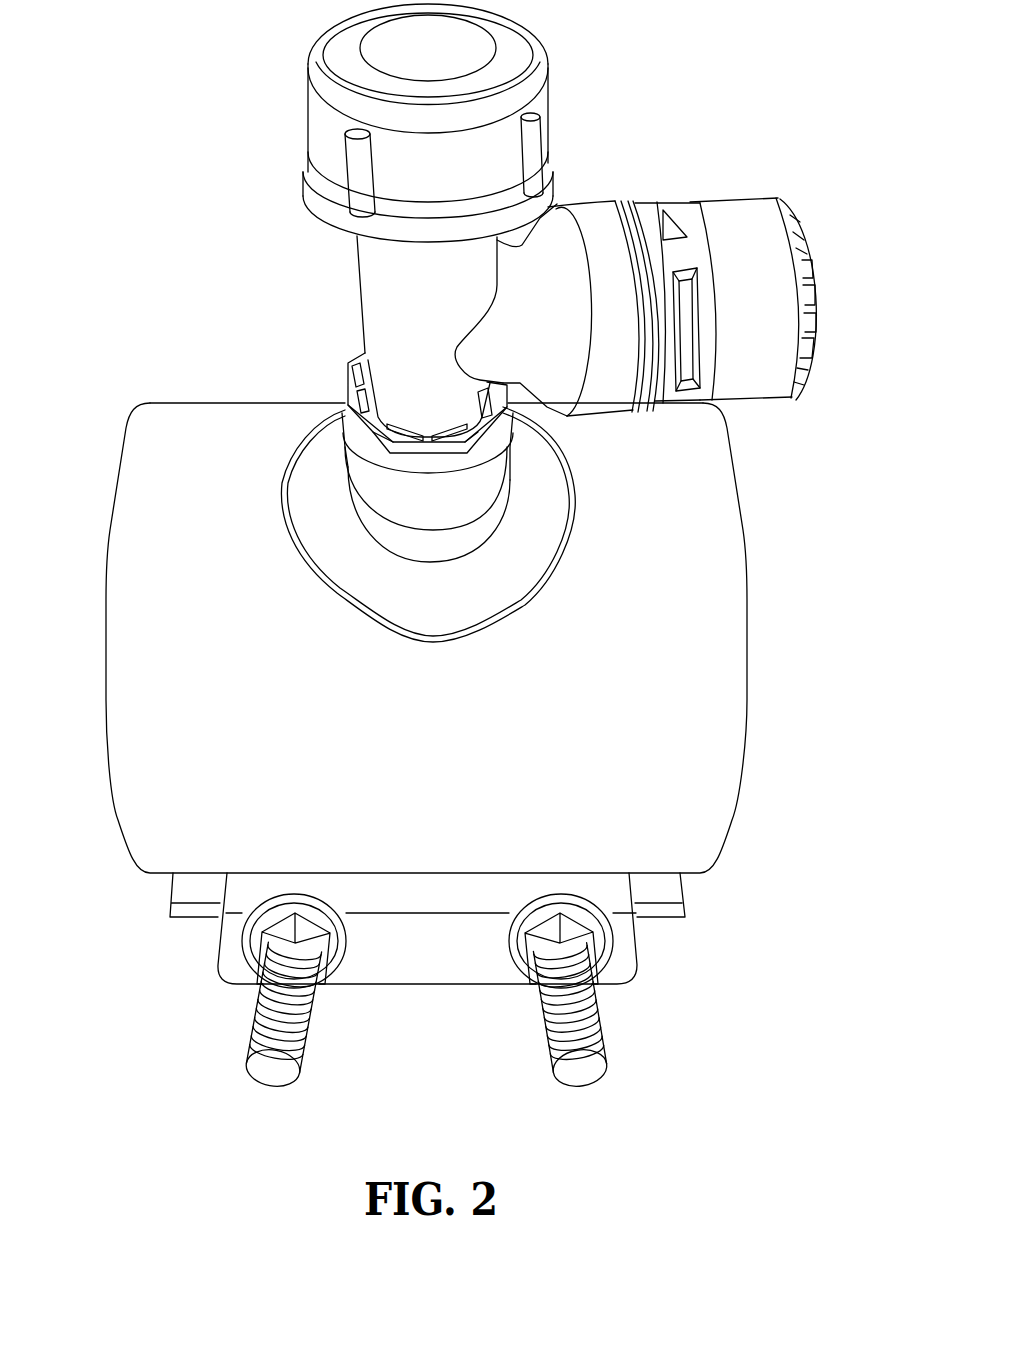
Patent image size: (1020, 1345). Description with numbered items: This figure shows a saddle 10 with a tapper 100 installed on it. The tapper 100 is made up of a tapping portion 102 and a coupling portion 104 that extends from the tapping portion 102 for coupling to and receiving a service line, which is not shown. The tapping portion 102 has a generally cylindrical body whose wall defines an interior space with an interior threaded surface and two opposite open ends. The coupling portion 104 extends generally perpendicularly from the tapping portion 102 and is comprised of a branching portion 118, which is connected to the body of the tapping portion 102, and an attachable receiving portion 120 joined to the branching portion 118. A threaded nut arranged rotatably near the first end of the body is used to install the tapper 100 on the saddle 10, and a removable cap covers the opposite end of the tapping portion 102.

The saddle 10 is at (148, 475).
The tapper 100 is at (128, 75).
The tapping portion 102 is at (320, 300).
The coupling portion 104 is at (668, 175).
The branching portion 118 is at (590, 220).
The attachable receiving portion 120 is at (775, 285).